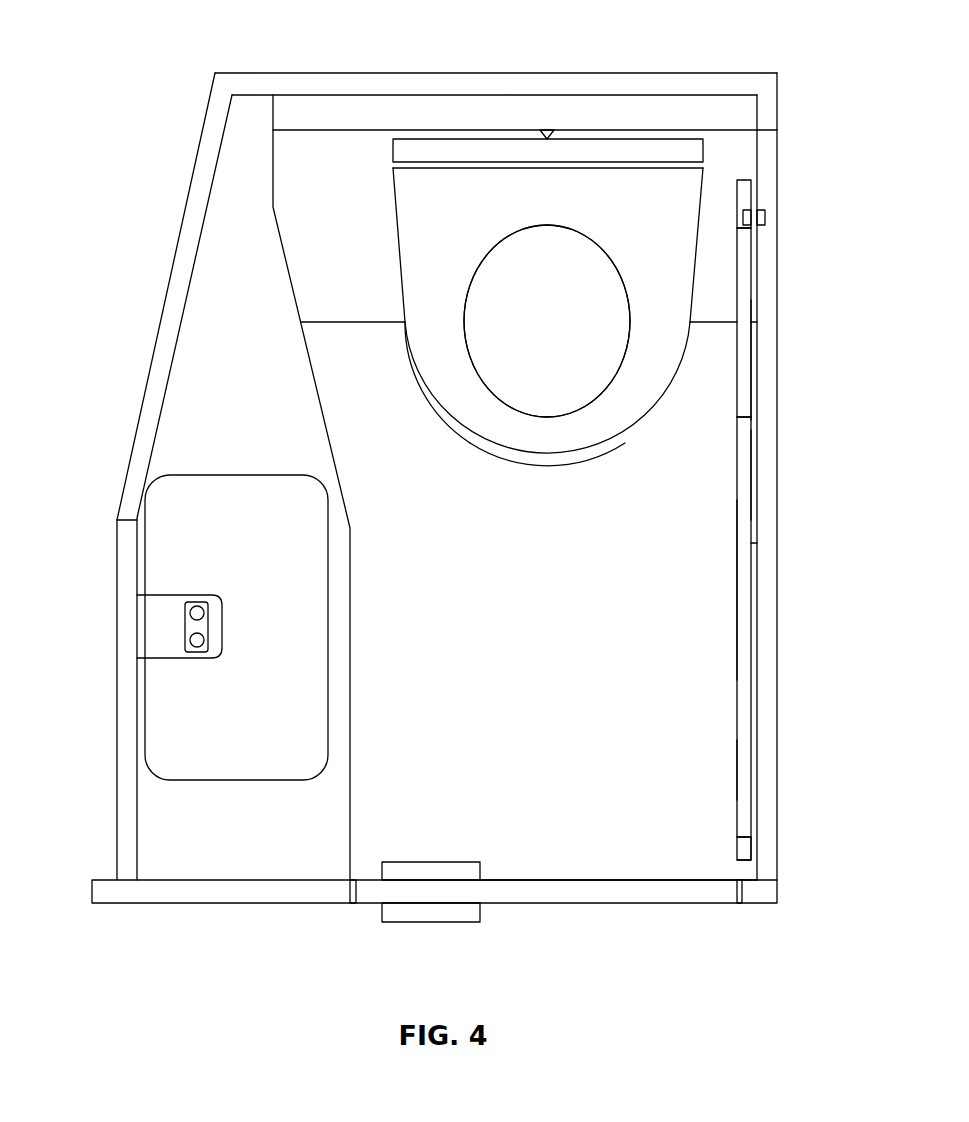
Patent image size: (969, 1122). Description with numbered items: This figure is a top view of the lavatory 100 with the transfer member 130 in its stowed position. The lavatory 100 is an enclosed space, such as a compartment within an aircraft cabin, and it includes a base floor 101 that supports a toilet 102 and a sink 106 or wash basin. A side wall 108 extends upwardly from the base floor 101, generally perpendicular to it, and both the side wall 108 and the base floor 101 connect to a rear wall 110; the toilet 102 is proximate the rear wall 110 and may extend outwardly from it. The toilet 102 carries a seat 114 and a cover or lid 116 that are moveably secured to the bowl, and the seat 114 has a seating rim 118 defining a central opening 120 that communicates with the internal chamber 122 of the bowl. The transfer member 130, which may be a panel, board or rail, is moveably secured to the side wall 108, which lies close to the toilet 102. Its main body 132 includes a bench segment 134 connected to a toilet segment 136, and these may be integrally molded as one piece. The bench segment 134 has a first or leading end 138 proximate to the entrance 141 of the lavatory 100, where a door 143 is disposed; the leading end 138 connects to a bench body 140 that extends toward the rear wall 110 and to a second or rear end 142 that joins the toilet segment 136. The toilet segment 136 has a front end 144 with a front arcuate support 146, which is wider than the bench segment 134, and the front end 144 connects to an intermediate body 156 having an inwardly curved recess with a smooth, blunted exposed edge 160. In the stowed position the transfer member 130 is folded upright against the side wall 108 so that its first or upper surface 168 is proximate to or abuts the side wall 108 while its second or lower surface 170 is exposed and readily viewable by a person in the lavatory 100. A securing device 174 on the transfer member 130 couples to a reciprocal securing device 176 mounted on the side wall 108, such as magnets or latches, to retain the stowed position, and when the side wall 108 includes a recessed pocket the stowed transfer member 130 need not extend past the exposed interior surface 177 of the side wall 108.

The lavatory 100 is at (190, 48).
The base floor 101 is at (655, 855).
The toilet 102 is at (442, 435).
The sink 106 is at (170, 717).
The side wall 108 is at (778, 828).
The rear wall 110 is at (318, 100).
The seat 114 is at (497, 445).
The lid 116 is at (643, 150).
The seating rim 118 is at (552, 442).
The central opening 120 is at (596, 375).
The internal chamber 122 is at (495, 364).
The transfer member 130 is at (726, 696).
The main body 132 is at (737, 607).
The bench segment 134 is at (737, 757).
The toilet segment 136 is at (735, 392).
The leading end 138 is at (737, 842).
The bench body 140 is at (737, 645).
The entrance 141 is at (545, 862).
The rear end 142 is at (737, 537).
The door 143 is at (497, 880).
The front end 144 is at (737, 480).
The front arcuate support 146 is at (751, 470).
The intermediate body 156 is at (745, 365).
The exposed edge 160 is at (743, 242).
The upper surface 168 is at (757, 543).
The lower surface 170 is at (737, 572).
The securing device 174 is at (743, 210).
The reciprocal securing device 176 is at (765, 215).
The exposed interior surface 177 is at (757, 162).